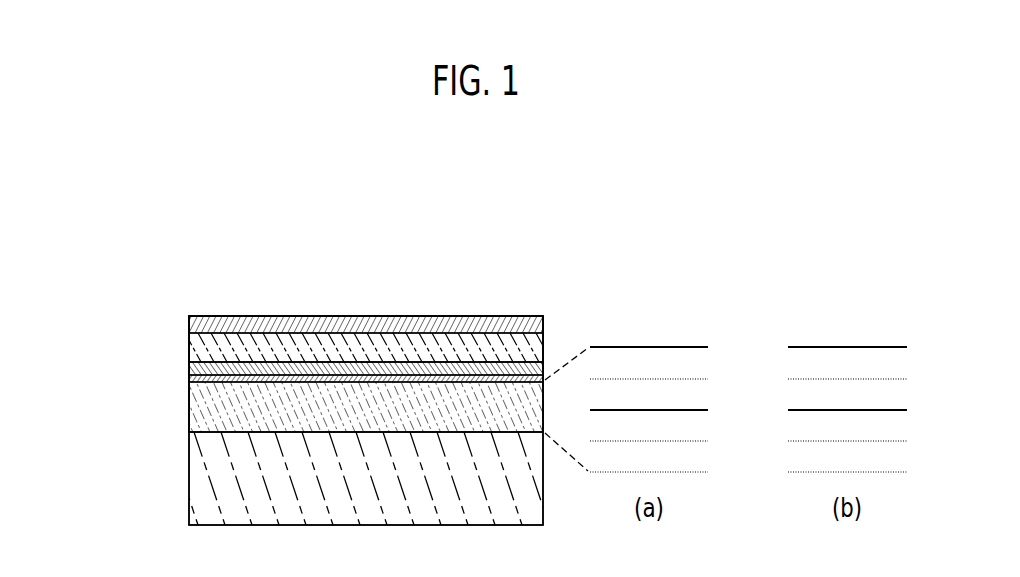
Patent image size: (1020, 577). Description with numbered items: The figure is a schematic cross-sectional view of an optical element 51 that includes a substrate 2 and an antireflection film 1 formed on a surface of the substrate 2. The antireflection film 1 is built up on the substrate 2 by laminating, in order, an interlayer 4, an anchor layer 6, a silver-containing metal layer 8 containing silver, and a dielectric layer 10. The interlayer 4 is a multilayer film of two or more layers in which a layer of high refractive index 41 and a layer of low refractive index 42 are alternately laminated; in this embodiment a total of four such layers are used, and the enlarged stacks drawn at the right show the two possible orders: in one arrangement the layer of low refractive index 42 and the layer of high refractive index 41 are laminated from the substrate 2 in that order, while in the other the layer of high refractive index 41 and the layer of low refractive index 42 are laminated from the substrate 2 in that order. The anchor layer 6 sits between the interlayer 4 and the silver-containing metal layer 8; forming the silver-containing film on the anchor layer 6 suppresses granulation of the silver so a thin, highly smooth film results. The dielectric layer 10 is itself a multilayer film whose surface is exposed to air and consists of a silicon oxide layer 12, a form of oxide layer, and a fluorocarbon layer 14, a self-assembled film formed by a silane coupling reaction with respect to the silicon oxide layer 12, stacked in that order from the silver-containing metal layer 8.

The antireflection film 1 is at (142, 432).
The substrate 2 is at (189, 493).
The interlayer 4 is at (189, 406).
The anchor layer 6 is at (189, 379).
The silver-containing metal layer 8 is at (189, 368).
The dielectric layer 10 is at (127, 268).
The silicon oxide layer 12 is at (189, 346).
The fluorocarbon layer 14 is at (189, 324).
The layer of high refractive index 41 is at (705, 364).
The layer of low refractive index 42 is at (705, 395).
The optical element 51 is at (505, 270).